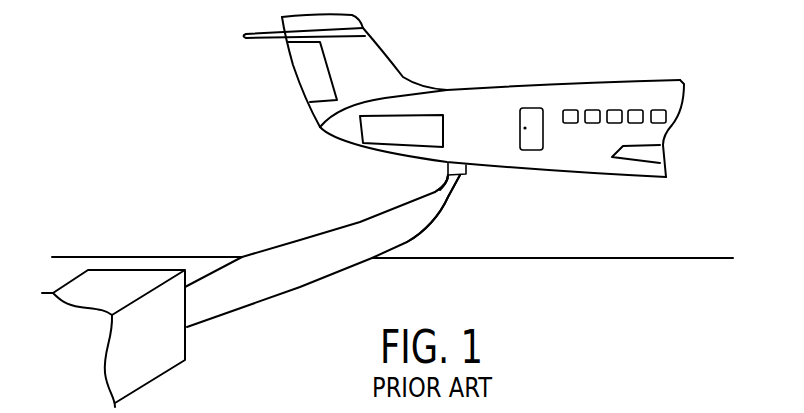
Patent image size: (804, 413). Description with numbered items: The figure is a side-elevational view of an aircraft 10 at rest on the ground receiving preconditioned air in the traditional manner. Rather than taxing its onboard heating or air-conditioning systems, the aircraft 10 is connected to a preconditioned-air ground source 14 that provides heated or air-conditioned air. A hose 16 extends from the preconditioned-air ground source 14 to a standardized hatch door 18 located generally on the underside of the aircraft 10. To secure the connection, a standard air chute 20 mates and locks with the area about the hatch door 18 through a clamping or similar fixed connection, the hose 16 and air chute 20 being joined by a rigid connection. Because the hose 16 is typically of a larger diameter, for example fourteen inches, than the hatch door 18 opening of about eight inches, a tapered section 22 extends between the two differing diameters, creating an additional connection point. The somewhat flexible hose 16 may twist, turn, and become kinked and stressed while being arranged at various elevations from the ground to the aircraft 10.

The aircraft 10 is at (612, 80).
The preconditioned-air ground source 14 is at (150, 383).
The hose 16 is at (232, 315).
The hatch door 18 is at (443, 171).
The air chute 20 is at (467, 168).
The tapered section 22 is at (450, 200).